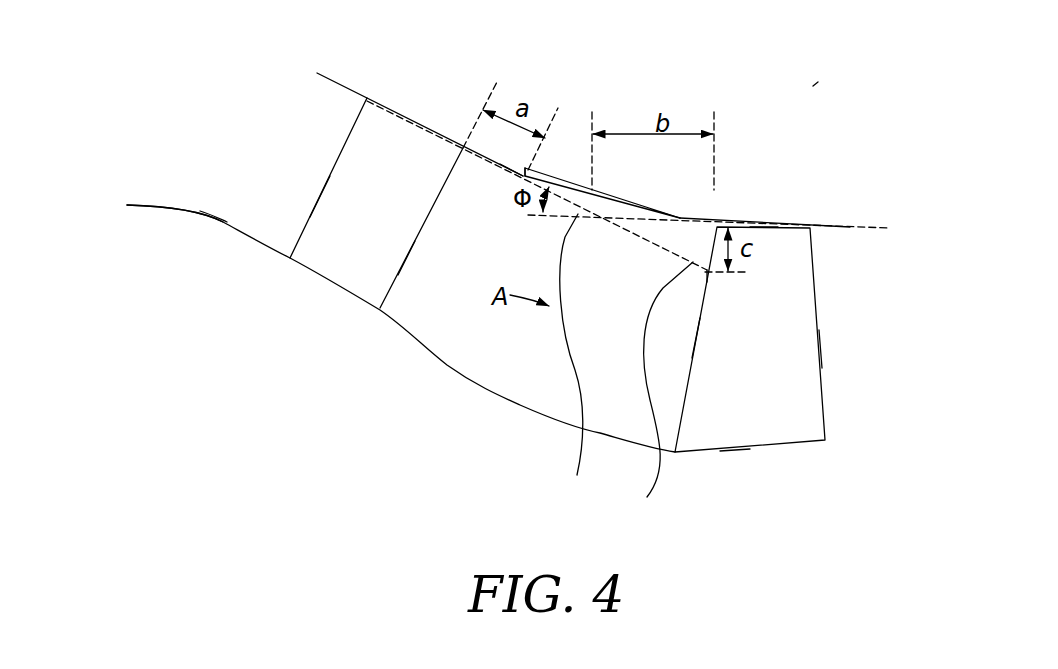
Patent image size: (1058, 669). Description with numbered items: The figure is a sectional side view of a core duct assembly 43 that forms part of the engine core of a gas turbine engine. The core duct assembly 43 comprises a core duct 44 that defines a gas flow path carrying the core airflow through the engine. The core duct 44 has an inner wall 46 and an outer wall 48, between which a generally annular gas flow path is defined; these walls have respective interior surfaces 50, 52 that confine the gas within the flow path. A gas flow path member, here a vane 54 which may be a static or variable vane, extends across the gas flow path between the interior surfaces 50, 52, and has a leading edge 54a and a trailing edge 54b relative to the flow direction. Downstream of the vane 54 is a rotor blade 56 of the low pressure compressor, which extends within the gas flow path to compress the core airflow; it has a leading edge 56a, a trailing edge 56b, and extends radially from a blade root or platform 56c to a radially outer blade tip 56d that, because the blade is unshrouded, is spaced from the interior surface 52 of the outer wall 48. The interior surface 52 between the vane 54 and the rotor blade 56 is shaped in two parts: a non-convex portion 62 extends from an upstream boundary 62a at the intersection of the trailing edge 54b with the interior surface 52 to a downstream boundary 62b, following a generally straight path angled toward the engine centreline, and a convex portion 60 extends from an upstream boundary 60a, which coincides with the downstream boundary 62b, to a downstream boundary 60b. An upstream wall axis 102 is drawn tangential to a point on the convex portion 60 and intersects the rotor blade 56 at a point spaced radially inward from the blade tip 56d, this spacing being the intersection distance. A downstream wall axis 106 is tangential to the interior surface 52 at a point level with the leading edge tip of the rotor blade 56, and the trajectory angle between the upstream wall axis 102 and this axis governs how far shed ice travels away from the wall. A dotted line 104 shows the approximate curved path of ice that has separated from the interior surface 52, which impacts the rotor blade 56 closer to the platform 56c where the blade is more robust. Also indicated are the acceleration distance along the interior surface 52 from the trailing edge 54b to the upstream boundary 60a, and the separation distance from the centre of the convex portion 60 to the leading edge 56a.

The core duct assembly 43 is at (824, 79).
The core duct 44 is at (146, 187).
The inner wall 46 is at (447, 367).
The outer wall 48 is at (838, 224).
The interior surface of inner wall 50 is at (229, 220).
The interior surface of outer wall 52 is at (331, 83).
The vane 54 is at (383, 224).
The leading edge of vane 54a is at (310, 217).
The trailing edge of vane 54b is at (398, 275).
The rotor blade 56 is at (768, 364).
The leading edge of rotor blade 56a is at (692, 358).
The trailing edge of rotor blade 56b is at (822, 368).
The blade root or platform 56c is at (750, 449).
The blade tip 56d is at (778, 226).
The convex portion 60 is at (615, 194).
The upstream boundary of convex portion 60a is at (523, 177).
The downstream boundary of convex portion 60b is at (680, 216).
The non-convex portion 62 is at (525, 168).
The upstream boundary of non-convex portion 62a is at (463, 146).
The downstream boundary of non-convex portion 62b is at (528, 168).
The upstream wall axis 102 is at (707, 282).
The ice path 104 is at (658, 397).
The downstream wall axis 106 is at (578, 363).